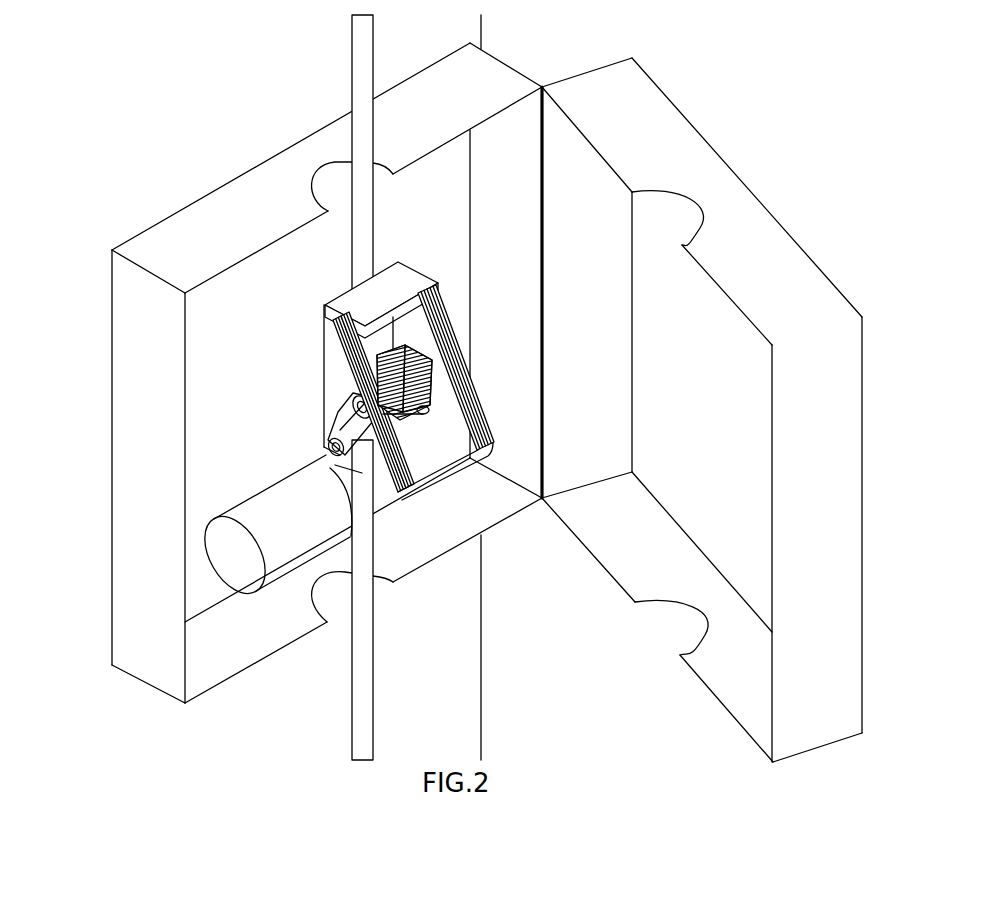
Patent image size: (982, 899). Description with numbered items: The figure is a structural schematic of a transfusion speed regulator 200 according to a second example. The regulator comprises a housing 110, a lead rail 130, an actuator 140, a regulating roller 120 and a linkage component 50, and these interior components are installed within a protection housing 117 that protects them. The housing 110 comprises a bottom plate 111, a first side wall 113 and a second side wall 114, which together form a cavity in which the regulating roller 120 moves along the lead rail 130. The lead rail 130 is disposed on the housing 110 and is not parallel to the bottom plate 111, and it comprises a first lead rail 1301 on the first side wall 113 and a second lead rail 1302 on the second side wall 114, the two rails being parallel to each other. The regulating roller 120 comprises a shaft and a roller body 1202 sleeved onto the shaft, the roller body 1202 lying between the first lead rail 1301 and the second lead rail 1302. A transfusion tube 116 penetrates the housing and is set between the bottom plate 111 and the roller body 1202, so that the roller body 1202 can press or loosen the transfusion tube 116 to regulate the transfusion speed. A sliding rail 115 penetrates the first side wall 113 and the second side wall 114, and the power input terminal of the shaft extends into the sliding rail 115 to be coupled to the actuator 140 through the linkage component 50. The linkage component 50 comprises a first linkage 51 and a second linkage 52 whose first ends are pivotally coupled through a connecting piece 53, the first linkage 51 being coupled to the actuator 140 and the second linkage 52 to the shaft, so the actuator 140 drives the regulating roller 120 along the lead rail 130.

The transfusion speed regulator 200 is at (98, 70).
The transfusion tube 116 is at (360, 83).
The protection housing 117 is at (657, 120).
The housing 110 is at (426, 415).
The bottom plate 111 is at (388, 332).
The first side wall 113 is at (335, 333).
The second side wall 114 is at (440, 330).
The sliding rail 115 is at (352, 360).
The lead rail 130 is at (426, 385).
The first lead rail 1301 is at (353, 370).
The second lead rail 1302 is at (442, 371).
The regulating roller 120 is at (494, 508).
The roller body 1202 is at (420, 408).
The linkage component 50 is at (379, 555).
The first linkage 51 is at (337, 470).
The second linkage 52 is at (372, 463).
The connecting piece 53 is at (330, 448).
The actuator 140 is at (308, 540).